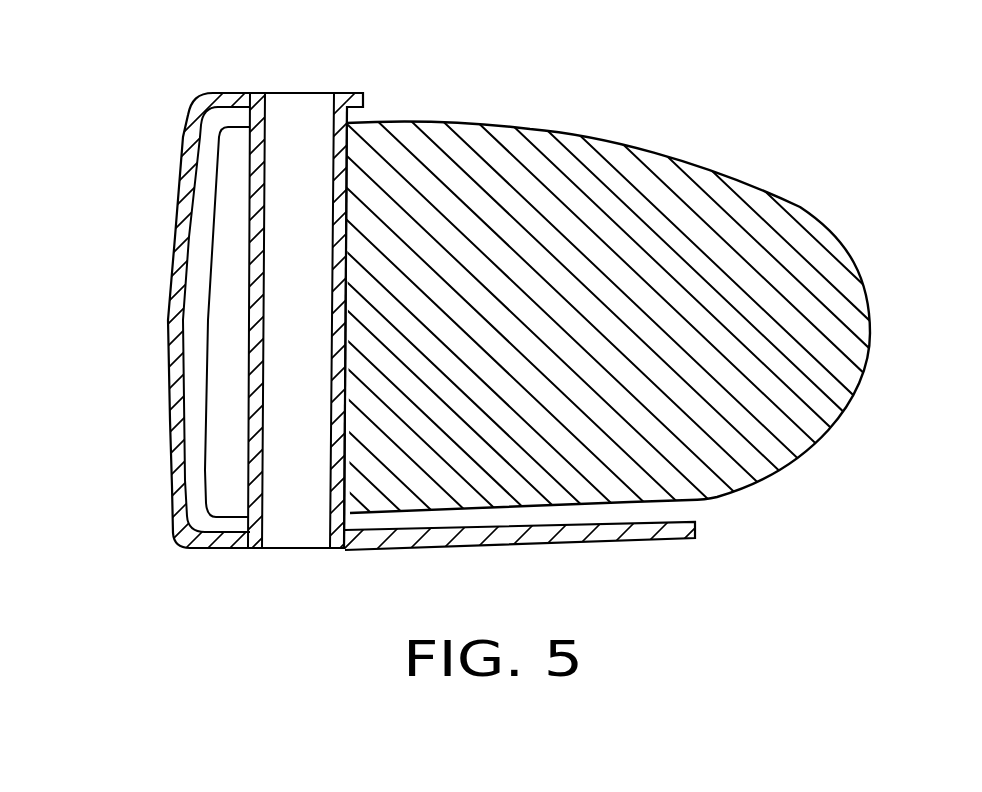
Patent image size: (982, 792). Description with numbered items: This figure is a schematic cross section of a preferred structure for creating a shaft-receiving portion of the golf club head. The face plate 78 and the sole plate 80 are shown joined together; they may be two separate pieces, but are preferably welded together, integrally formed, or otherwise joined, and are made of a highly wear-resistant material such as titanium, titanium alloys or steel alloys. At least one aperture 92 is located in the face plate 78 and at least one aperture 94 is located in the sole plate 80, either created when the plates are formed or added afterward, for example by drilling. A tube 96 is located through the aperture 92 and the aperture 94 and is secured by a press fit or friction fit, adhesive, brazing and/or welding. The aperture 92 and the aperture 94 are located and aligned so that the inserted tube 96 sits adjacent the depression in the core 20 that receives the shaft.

The core 20 is at (662, 175).
The face plate 78 is at (173, 245).
The sole plate 80 is at (512, 542).
The aperture 92 is at (312, 92).
The aperture 94 is at (295, 552).
The tube 96 is at (345, 172).